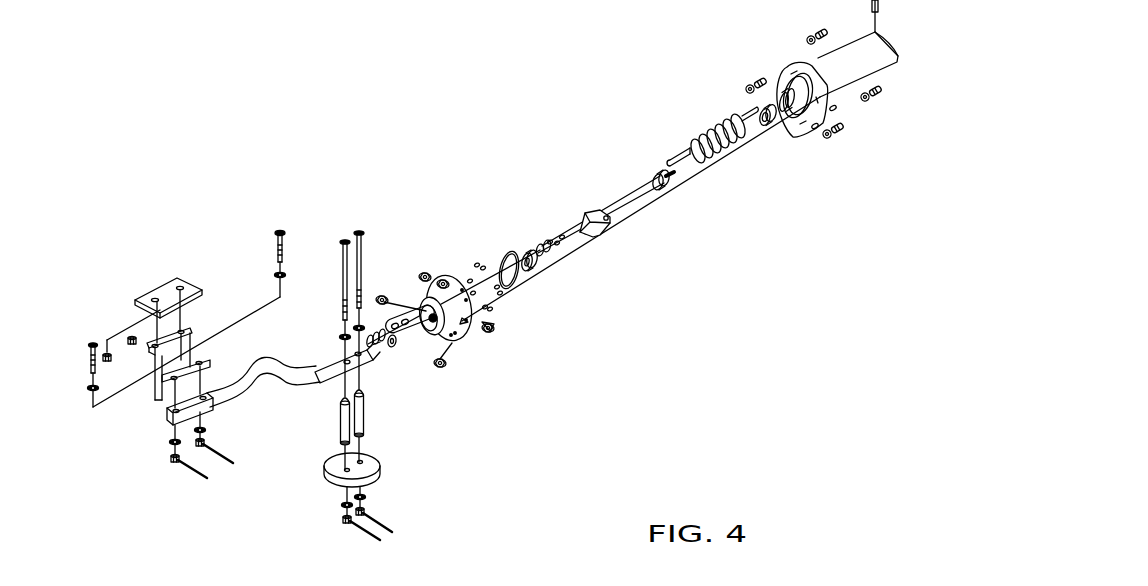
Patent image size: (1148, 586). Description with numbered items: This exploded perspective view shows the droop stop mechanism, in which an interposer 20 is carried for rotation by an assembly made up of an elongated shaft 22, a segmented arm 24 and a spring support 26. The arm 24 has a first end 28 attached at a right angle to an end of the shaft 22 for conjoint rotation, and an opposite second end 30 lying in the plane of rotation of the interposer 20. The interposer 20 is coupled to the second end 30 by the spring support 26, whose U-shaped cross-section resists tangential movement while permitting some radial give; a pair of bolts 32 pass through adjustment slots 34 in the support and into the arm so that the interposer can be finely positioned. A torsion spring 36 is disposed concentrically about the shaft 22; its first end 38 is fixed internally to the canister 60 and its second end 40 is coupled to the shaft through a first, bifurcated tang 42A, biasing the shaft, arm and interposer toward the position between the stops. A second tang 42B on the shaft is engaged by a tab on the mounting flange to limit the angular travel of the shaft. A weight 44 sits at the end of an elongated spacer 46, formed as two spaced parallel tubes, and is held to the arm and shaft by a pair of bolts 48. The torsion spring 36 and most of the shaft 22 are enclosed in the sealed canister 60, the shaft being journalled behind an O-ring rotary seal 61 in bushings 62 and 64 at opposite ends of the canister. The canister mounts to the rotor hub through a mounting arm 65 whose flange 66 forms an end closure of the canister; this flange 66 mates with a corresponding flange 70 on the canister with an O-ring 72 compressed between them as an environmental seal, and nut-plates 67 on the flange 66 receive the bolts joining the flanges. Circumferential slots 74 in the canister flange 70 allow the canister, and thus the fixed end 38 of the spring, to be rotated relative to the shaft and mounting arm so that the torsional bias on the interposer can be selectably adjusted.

The interposer 20 is at (168, 286).
The elongated shaft 22 is at (622, 199).
The segmented arm 24 is at (277, 361).
The spring support 26 is at (152, 398).
The first end of the arm 28 is at (369, 367).
The second end of the arm 30 is at (168, 412).
The bolts 32 is at (276, 238).
The adjustment slots 34 is at (200, 363).
The torsion spring 36 is at (714, 133).
The first end of the torsion spring 38 is at (742, 112).
The second end of the torsion spring 40 is at (679, 161).
The first bifurcated tang 42A is at (606, 224).
The second tang 42B is at (589, 211).
The weight 44 is at (376, 465).
The elongated spacer 46 is at (364, 420).
The bolts 48 is at (366, 246).
The canister 60 is at (800, 60).
The O-ring rotary seal 61 is at (408, 346).
The bushing 62 is at (537, 264).
The bushing 64 is at (768, 127).
The mounting arm 65 is at (412, 306).
The flange of the mounting arm 66 is at (446, 276).
The nut-plates 67 is at (448, 366).
The flange of the canister 70 is at (794, 122).
The O-ring 72 is at (504, 253).
The circumferential slots 74 is at (820, 88).